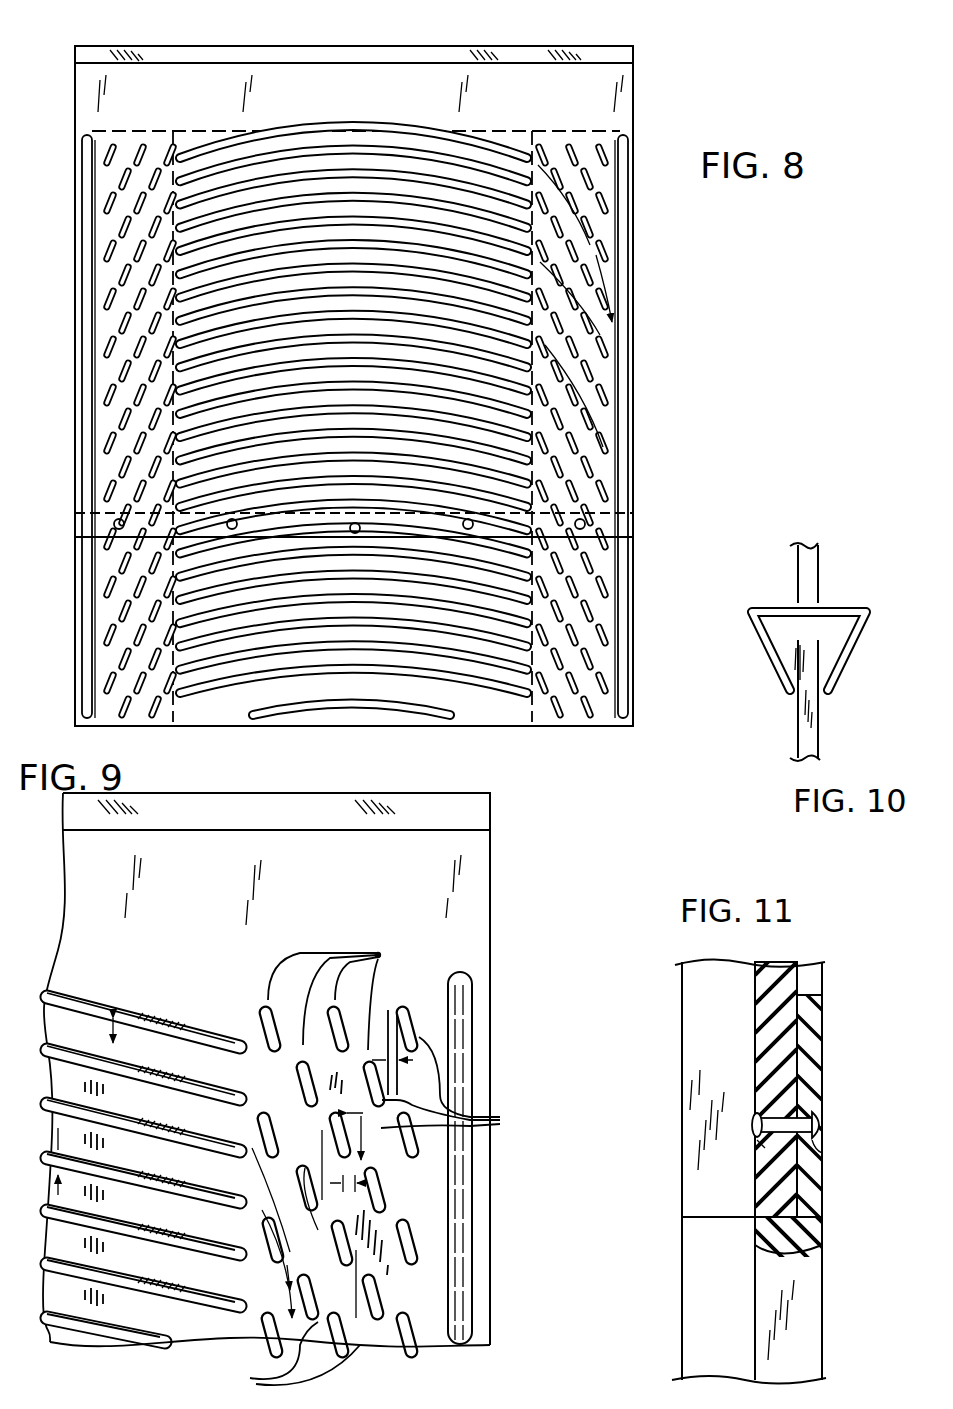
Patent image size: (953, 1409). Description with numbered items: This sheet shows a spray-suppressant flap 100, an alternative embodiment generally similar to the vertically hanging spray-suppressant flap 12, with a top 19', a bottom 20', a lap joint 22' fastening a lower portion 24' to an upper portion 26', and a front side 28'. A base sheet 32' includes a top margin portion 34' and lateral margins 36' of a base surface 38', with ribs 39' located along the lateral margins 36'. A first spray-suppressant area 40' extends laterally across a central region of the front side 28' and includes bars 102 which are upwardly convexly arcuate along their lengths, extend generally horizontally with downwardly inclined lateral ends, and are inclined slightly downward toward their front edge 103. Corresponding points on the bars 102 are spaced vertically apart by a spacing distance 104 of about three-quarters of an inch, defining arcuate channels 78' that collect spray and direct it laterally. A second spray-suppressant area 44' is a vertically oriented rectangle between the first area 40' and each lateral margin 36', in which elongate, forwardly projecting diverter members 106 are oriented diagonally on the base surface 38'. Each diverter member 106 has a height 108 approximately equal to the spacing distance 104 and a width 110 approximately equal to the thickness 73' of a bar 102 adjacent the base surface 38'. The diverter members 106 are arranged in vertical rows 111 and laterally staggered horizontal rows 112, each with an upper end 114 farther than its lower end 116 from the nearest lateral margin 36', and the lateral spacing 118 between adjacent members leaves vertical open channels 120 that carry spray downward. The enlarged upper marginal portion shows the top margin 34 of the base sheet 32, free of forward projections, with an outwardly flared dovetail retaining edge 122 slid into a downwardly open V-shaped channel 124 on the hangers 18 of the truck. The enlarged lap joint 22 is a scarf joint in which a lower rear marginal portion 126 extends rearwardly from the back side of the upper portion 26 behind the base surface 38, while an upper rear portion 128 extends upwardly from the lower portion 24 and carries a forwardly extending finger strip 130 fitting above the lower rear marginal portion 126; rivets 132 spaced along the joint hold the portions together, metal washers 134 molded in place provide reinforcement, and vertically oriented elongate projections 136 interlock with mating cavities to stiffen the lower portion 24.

In FIG. 8, the top 19' is at (354, 41).
In FIG. 9, the top 19' is at (276, 797).
In FIG. 8, the flap 100 is at (648, 78).
In FIG. 8, the second spray-suppressant area 44' is at (360, 401).
In FIG. 8, the front side 28' is at (203, 407).
In FIG. 9, the front side 28' is at (487, 910).
In FIG. 8, the top margin portion 34' is at (357, 101).
In FIG. 9, the top margin portion 34' is at (293, 888).
In FIG. 8, the arcuate channels 78' is at (353, 393).
In FIG. 9, the arcuate channels 78' is at (143, 1142).
In FIG. 8, the bars 102 is at (414, 186).
In FIG. 9, the bars 102 is at (165, 1067).
In FIG. 8, the first spray-suppressant area 40' is at (533, 405).
In FIG. 8, the ribs 39' is at (357, 426).
In FIG. 9, the ribs 39' is at (499, 1158).
In FIG. 8, the lateral margins 36' is at (357, 429).
In FIG. 9, the lateral margins 36' is at (302, 1190).
In FIG. 8, the upper portion 26' is at (661, 386).
In FIG. 8, the rivets 132 is at (582, 523).
In FIG. 11, the rivets 132 is at (825, 1126).
In FIG. 8, the lap joint 22' is at (382, 546).
In FIG. 8, the lower portion 24' is at (659, 631).
In FIG. 8, the bottom 20' is at (354, 741).
In FIG. 9, the base sheet 32' is at (299, 1069).
In FIG. 9, the spacing distance 104 is at (117, 1020).
In FIG. 9, the front edge 103 is at (202, 1093).
In FIG. 9, the vertical rows 111 is at (349, 996).
In FIG. 9, the lateral spacing 118 is at (386, 1022).
In FIG. 9, the base surface 38' is at (267, 1074).
In FIG. 9, the thickness 73' is at (36, 1147).
In FIG. 9, the upper end 114 is at (316, 1162).
In FIG. 9, the height 108 is at (363, 1148).
In FIG. 9, the width 110 is at (344, 1195).
In FIG. 9, the lower end 116 is at (302, 1218).
In FIG. 9, the horizontal rows 112 is at (464, 1085).
In FIG. 9, the diverter members 106 is at (410, 1252).
In FIG. 9, the open channels 120 is at (291, 1359).
In FIG. 10, the hangers 18 is at (812, 576).
In FIG. 10, the retaining edge 122 is at (822, 649).
In FIG. 10, the V-shaped channel 124 is at (775, 672).
In FIG. 10, the top margin 34 is at (838, 700).
In FIG. 11, the spray-suppressant flap 12 is at (828, 964).
In FIG. 11, the base sheet 32 is at (850, 1171).
In FIG. 11, the finger strip 130 is at (822, 1006).
In FIG. 11, the upper portion 26 is at (677, 1171).
In FIG. 11, the base surface 38 is at (730, 1171).
In FIG. 11, the lower rear marginal portion 126 is at (822, 1096).
In FIG. 11, the metal washers 134 is at (757, 1141).
In FIG. 11, the upper rear portion 128 is at (822, 1182).
In FIG. 11, the elongate projections 136 is at (832, 1209).
In FIG. 11, the lap joint 22 is at (696, 1201).
In FIG. 11, the lower portion 24 is at (828, 1320).